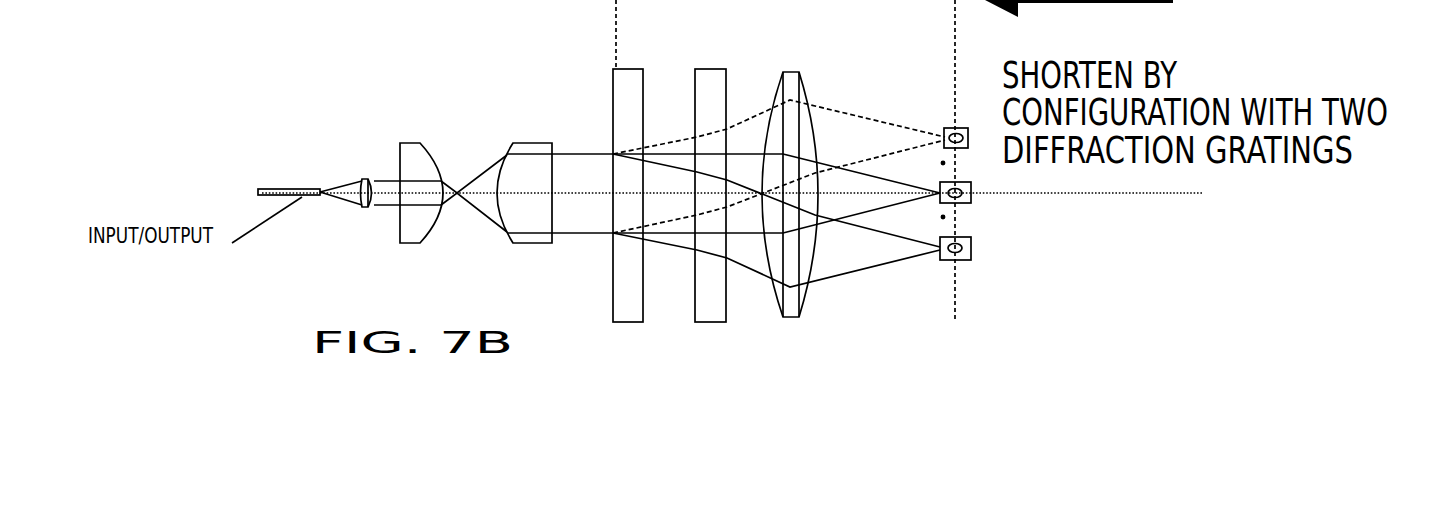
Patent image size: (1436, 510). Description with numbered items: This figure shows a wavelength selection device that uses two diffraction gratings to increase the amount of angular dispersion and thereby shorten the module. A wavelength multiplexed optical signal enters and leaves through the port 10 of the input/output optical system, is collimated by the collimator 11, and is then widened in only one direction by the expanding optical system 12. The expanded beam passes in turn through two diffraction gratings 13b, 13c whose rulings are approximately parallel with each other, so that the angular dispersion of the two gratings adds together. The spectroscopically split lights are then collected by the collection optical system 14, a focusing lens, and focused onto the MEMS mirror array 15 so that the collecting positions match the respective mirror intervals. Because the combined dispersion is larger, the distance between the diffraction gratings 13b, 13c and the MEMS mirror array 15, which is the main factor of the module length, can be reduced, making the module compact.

The port 10 is at (284, 188).
The collimator 11 is at (362, 180).
The expanding optical system 12 is at (552, 128).
The diffraction grating 13b is at (622, 322).
The diffraction grating 13c is at (727, 322).
The collection optical system 14 is at (790, 72).
The MEMS mirror array 15 is at (990, 49).